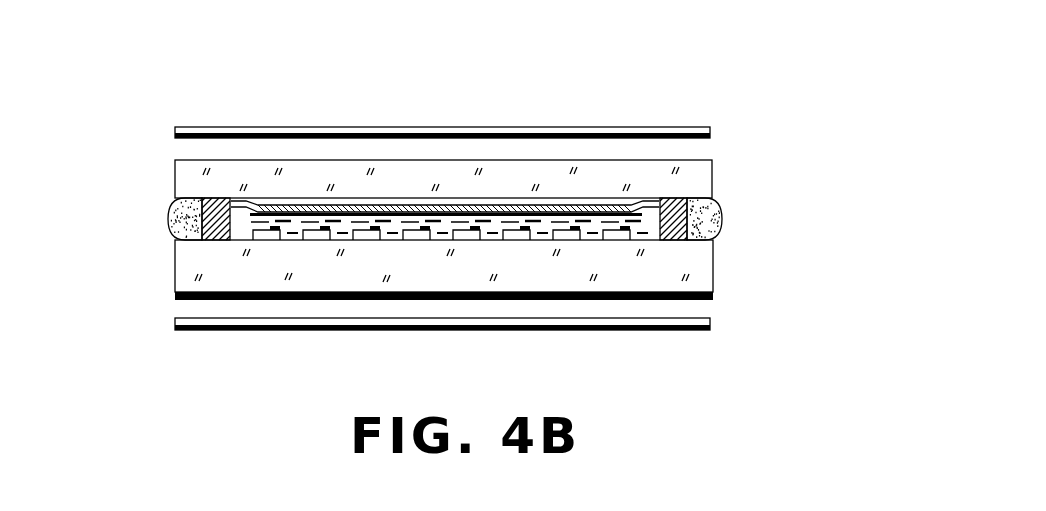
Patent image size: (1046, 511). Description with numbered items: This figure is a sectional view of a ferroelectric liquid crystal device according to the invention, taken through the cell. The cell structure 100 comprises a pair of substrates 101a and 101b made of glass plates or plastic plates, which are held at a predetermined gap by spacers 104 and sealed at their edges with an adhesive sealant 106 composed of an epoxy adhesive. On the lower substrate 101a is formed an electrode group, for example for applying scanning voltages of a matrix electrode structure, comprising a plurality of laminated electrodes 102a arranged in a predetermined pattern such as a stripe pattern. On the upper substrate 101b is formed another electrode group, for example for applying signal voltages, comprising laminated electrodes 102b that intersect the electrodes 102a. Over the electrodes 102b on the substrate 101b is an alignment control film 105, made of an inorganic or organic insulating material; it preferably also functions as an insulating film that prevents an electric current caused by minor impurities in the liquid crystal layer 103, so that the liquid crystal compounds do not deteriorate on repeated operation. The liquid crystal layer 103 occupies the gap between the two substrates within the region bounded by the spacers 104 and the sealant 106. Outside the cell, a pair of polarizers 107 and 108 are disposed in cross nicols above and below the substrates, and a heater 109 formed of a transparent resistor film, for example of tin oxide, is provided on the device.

The cell structure 100 is at (450, 224).
The substrate 101a is at (703, 272).
The substrate 101b is at (700, 185).
The laminated electrodes 102a is at (315, 232).
The laminated electrodes 102b is at (555, 207).
The liquid crystal layer 103 is at (340, 226).
The spacers 104 is at (215, 215).
The alignment control film 105 is at (495, 208).
The sealant 106 is at (170, 215).
The polarizer 107 is at (710, 323).
The polarizer 108 is at (712, 132).
The heater 109 is at (197, 302).